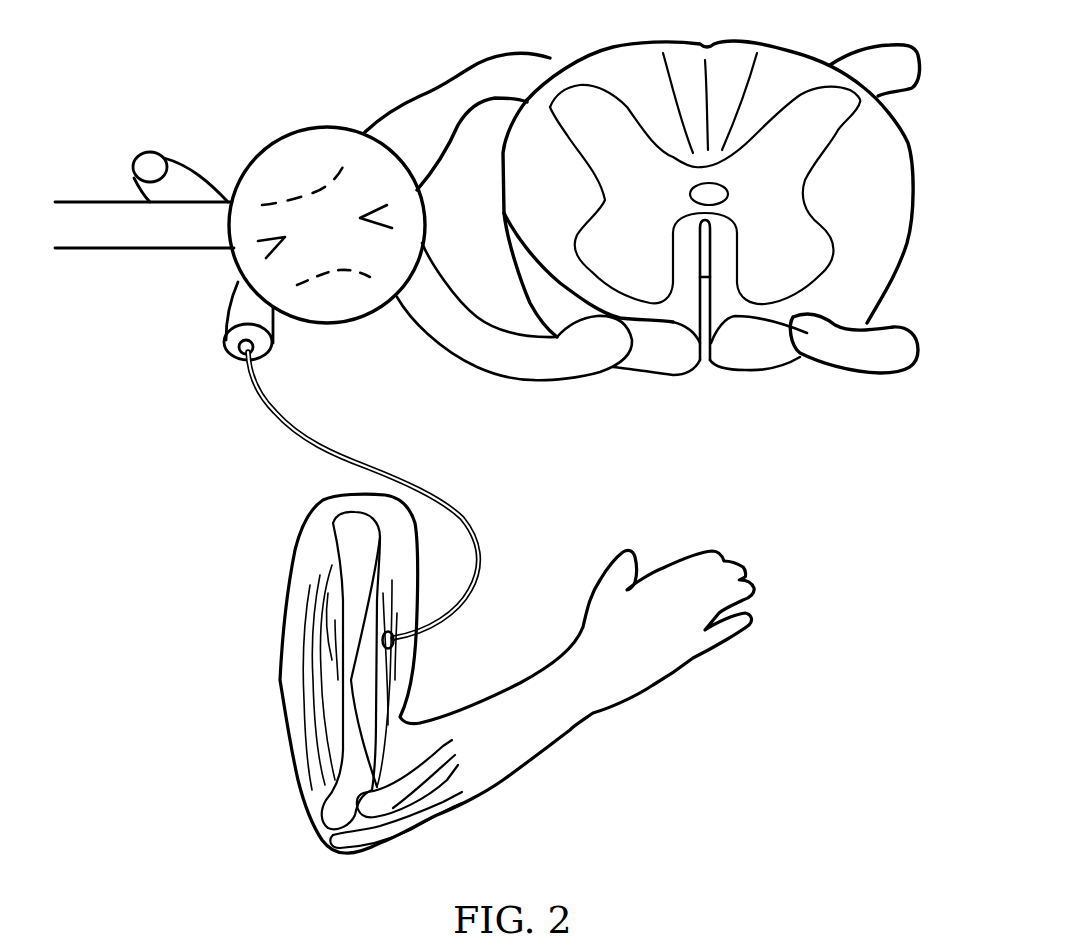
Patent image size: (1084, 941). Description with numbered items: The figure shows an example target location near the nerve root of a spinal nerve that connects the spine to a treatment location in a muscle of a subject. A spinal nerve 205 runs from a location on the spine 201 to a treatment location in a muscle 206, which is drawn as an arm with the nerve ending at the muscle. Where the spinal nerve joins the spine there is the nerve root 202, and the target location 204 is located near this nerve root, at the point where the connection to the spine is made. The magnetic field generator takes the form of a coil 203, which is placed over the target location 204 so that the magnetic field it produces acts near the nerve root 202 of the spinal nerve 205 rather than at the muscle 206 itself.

The spine 201 is at (750, 317).
The nerve root 202 is at (440, 315).
The coil 203 is at (233, 266).
The target location 204 is at (317, 245).
The spinal nerve 205 is at (323, 440).
The muscle 206 is at (382, 650).